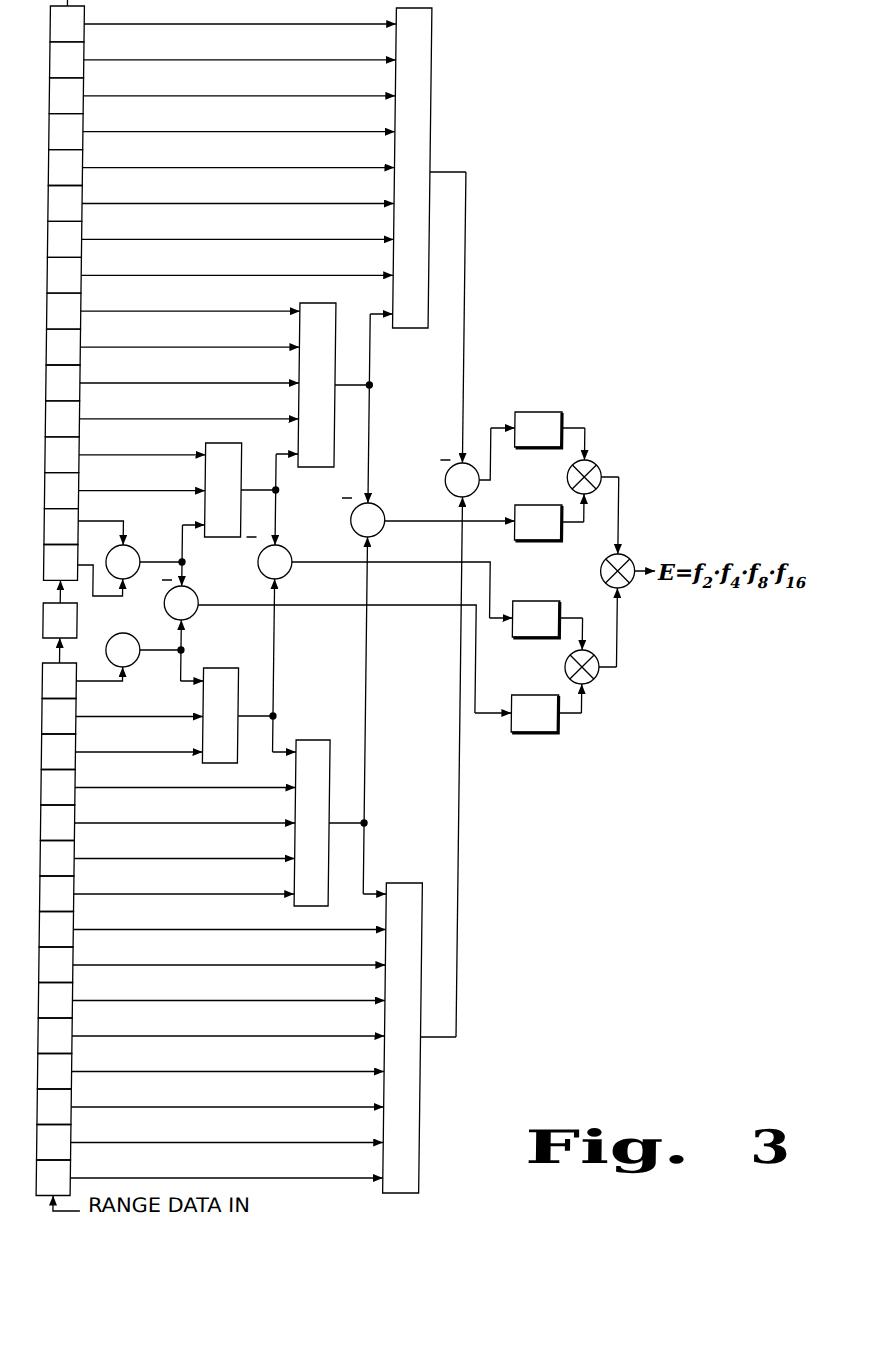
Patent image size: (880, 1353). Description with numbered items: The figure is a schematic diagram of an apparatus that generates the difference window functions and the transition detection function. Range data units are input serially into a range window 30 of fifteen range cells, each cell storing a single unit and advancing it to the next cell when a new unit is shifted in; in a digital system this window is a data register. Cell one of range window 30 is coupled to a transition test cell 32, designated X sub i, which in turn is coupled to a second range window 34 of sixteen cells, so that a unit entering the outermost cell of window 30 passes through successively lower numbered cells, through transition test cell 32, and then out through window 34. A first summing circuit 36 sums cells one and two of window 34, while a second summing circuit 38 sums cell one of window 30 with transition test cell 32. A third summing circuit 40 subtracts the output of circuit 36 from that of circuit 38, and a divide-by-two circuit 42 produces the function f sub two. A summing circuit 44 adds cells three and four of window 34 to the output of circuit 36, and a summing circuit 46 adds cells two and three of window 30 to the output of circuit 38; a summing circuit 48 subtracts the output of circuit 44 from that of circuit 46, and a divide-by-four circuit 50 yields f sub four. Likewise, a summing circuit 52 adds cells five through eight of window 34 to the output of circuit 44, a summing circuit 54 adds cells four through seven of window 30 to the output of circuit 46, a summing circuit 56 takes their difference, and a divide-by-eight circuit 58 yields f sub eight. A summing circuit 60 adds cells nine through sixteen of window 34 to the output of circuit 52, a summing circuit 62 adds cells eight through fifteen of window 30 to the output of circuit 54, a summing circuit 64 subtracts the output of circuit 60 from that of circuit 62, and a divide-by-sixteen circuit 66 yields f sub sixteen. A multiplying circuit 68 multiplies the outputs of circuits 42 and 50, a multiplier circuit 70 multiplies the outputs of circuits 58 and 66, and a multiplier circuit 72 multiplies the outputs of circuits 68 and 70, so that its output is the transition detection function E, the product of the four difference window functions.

The range window 30 is at (125, 1048).
The transition test cell 32 is at (93, 645).
The range window 34 is at (102, 118).
The first summing circuit 36 is at (144, 547).
The second summing circuit 38 is at (148, 662).
The third summing circuit 40 is at (204, 602).
The divide-by-two circuit 42 is at (527, 733).
The summing circuit 44 is at (248, 473).
The summing circuit 46 is at (246, 668).
The summing circuit 48 is at (302, 548).
The divide-by-four circuit 50 is at (545, 640).
The summing circuit 52 is at (340, 402).
The summing circuit 54 is at (340, 740).
The summing circuit 56 is at (388, 507).
The divide-by-eight circuit 58 is at (554, 542).
The summing circuit 60 is at (434, 118).
The summing circuit 62 is at (434, 885).
The summing circuit 64 is at (451, 473).
The divide-by-sixteen circuit 66 is at (538, 410).
The multiplying circuit 68 is at (600, 683).
The multiplier circuit 70 is at (608, 470).
The multiplier circuit 72 is at (640, 558).